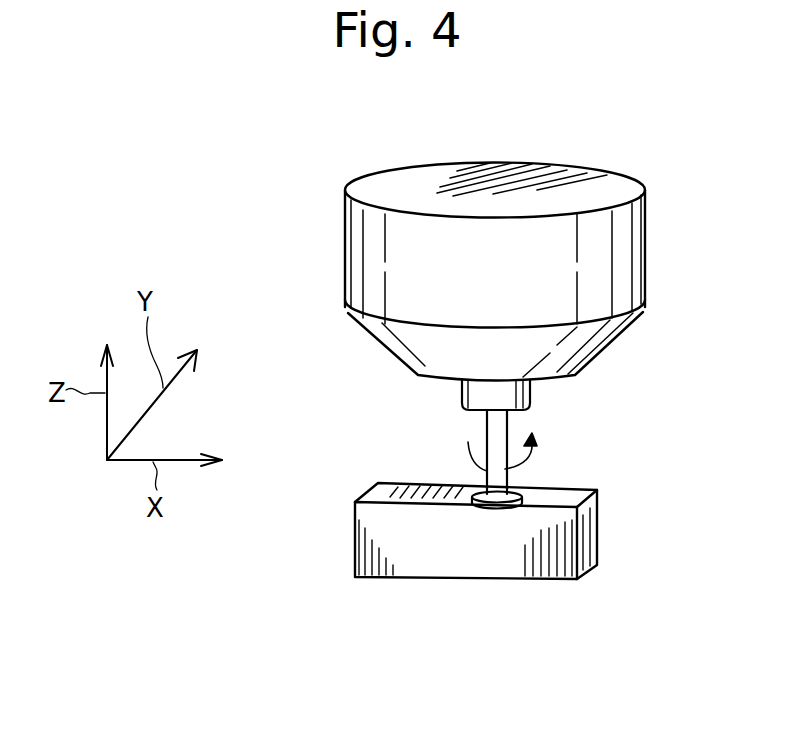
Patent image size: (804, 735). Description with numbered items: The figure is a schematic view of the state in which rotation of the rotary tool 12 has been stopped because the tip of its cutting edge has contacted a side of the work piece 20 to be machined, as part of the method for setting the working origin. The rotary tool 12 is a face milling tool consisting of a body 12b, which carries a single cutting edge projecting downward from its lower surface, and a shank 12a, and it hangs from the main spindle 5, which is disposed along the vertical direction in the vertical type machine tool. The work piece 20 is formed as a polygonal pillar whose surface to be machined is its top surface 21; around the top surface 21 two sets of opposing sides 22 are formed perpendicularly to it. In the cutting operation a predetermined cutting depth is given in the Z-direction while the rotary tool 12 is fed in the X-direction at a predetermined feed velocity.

The main spindle 5 is at (493, 182).
The rotary tool 12 is at (497, 438).
The shank 12a is at (492, 422).
The body 12b is at (497, 505).
The work piece 20 is at (596, 528).
The top surface 21 is at (387, 493).
The sides 22 is at (410, 547).